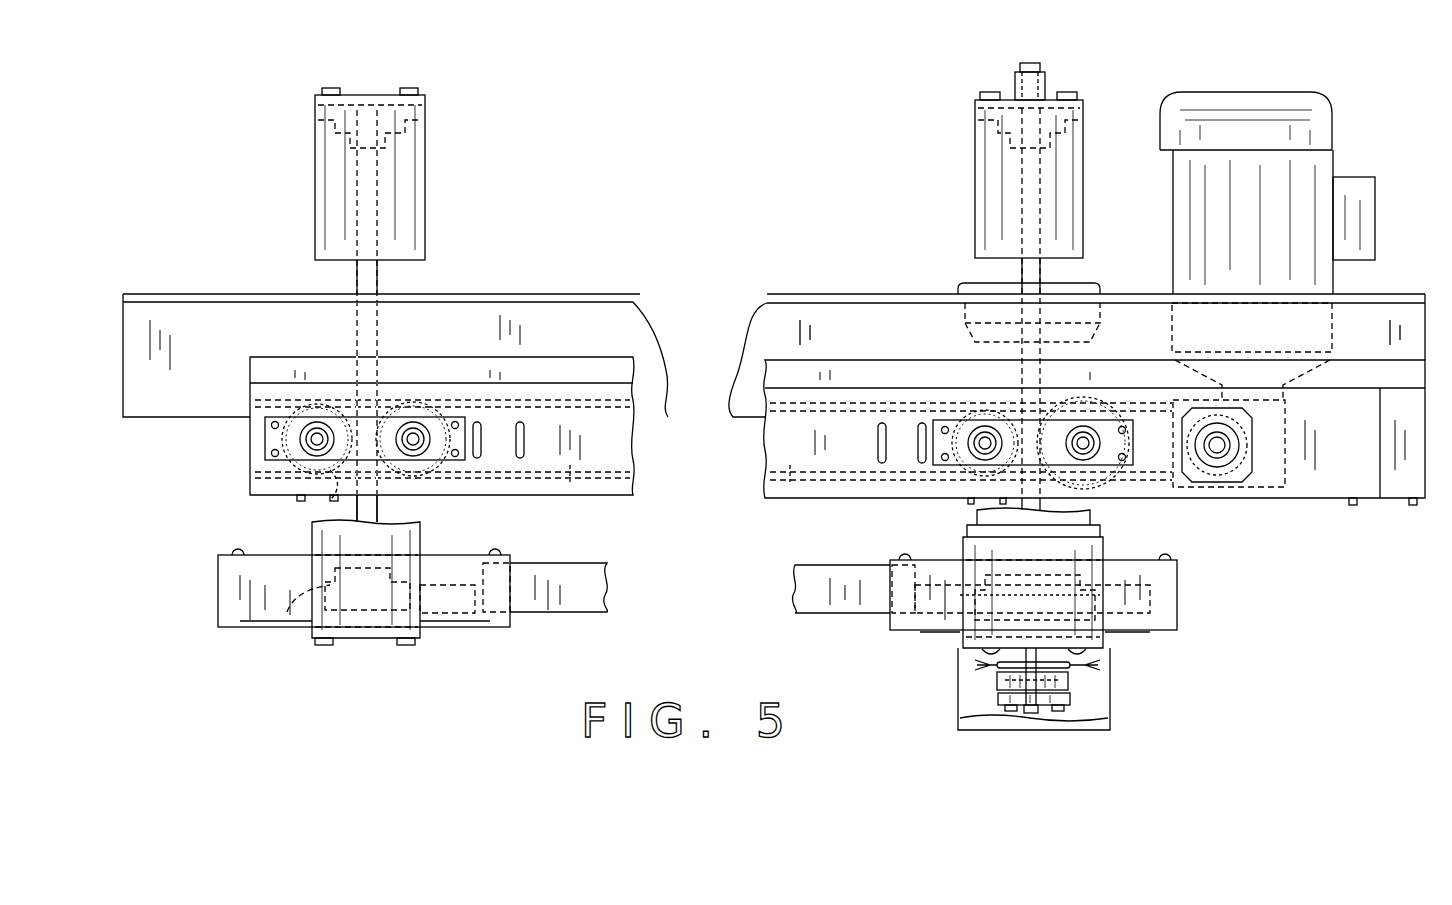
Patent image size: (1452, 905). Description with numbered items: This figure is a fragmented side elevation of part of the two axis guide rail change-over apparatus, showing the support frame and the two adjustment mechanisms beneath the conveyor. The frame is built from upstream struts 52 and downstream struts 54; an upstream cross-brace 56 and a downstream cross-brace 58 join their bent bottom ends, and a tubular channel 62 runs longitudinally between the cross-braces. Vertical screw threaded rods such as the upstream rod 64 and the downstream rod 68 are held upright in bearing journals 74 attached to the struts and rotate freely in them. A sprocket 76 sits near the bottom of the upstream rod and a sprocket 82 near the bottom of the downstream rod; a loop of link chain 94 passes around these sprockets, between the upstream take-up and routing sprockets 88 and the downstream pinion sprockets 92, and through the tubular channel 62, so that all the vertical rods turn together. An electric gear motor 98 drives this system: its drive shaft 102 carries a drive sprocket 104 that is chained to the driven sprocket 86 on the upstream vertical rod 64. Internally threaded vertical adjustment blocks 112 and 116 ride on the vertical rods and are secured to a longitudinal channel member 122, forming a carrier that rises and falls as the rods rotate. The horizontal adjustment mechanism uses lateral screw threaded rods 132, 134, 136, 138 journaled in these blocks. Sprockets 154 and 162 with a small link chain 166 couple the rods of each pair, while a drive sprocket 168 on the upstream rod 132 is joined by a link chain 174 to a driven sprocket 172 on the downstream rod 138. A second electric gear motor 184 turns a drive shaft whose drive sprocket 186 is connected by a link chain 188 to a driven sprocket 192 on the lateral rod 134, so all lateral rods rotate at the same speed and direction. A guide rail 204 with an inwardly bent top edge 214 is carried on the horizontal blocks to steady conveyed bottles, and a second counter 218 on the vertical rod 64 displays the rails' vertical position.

The upstream struts 52 is at (990, 150).
The downstream struts 54 is at (400, 190).
The upstream cross-brace 56 is at (1170, 610).
The downstream cross-brace 58 is at (230, 615).
The tubular channel 62 is at (555, 600).
The upstream vertical screw threaded rod 64 is at (1025, 278).
The downstream vertical screw threaded rod 68 is at (360, 278).
The bearing journals 74 is at (400, 125).
The sprocket 76 is at (1105, 655).
The sprocket 82 is at (297, 612).
The driven sprocket 86 is at (1062, 680).
The upstream take-up and routing sprockets 88 is at (945, 632).
The downstream pinion sprockets 92 is at (458, 635).
The link chain 94 is at (470, 635).
The electric gear motor 98 is at (1095, 552).
The drive shaft 102 is at (1031, 713).
The drive sprocket 104 is at (1070, 700).
The vertical adjustment block 112 is at (937, 437).
The vertical adjustment block 116 is at (265, 428).
The longitudinal channel member 122 is at (265, 477).
The upstream lateral screw threaded rod 132 is at (985, 440).
The upstream lateral screw threaded rod 134 is at (1113, 418).
The downstream lateral screw threaded rod 136 is at (317, 422).
The downstream lateral screw threaded rod 138 is at (413, 422).
The sprocket 154 is at (1080, 397).
The sprocket 162 is at (290, 440).
The link chain 166 is at (325, 485).
The drive sprocket 168 is at (950, 470).
The driven sprocket 172 is at (420, 470).
The link chain 174 is at (577, 480).
The electric gear motor 184 is at (1315, 215).
The drive sprocket 186 is at (1200, 487).
The link chain 188 is at (1225, 492).
The driven sprocket 192 is at (1090, 482).
The guide rail 204 is at (145, 350).
The top edge 214 is at (180, 296).
The second counter 218 is at (1045, 80).